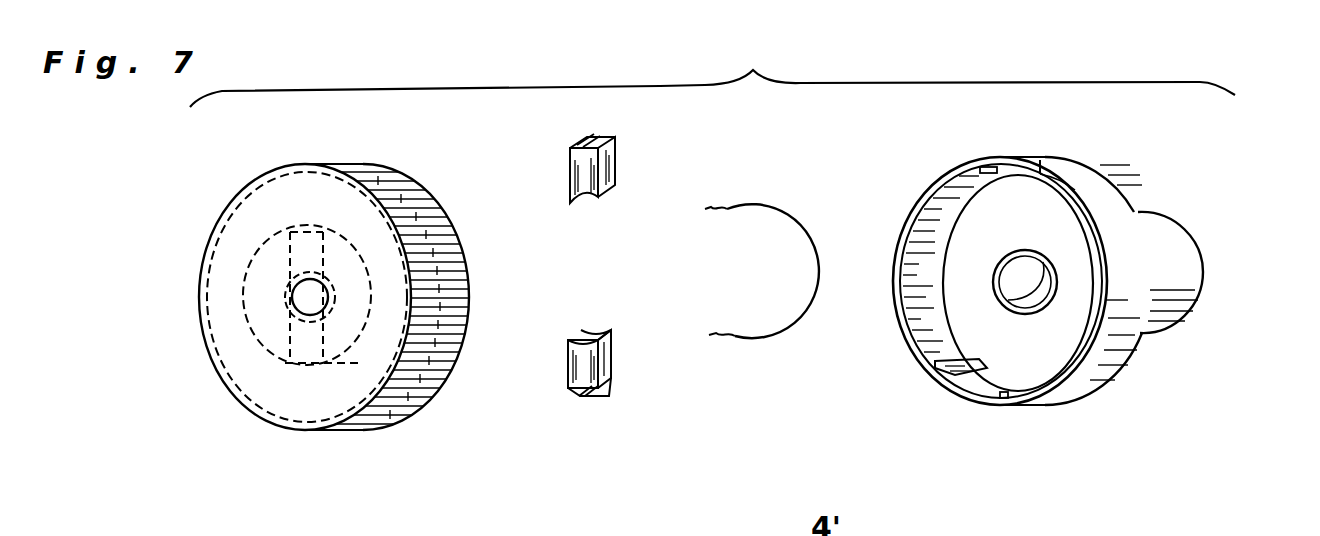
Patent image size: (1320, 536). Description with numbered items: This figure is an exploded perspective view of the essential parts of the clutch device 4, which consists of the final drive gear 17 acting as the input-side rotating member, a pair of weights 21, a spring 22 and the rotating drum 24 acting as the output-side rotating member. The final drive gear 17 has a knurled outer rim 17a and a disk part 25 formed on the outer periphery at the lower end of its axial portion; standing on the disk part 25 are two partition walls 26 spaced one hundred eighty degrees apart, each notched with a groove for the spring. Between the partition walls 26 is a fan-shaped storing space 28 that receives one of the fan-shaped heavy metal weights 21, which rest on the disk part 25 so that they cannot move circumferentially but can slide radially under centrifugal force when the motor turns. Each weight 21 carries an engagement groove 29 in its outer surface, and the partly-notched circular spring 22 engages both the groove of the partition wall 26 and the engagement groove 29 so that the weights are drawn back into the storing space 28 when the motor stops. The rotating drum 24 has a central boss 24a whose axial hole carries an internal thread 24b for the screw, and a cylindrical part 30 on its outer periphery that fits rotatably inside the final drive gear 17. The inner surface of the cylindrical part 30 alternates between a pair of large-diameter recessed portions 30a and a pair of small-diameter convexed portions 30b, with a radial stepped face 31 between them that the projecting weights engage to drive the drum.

The clutch device 4 is at (755, 67).
The final drive gear 17 is at (317, 303).
The knurled rim of wheel 17a is at (450, 247).
The weight 21 is at (617, 172).
The spring 22 is at (778, 340).
The rotating drum 24 is at (1057, 299).
The central boss 24a is at (1182, 247).
The internal thread 24b is at (1020, 285).
The disk part 25 is at (237, 238).
The partition wall 26 is at (270, 233).
The storing space 28 is at (302, 247).
The engagement groove 29 is at (592, 140).
The cylindrical part 30 is at (1107, 200).
The recessed portion 30a is at (913, 287).
The convexed portion 30b is at (1038, 177).
The stepped face 31 is at (977, 168).